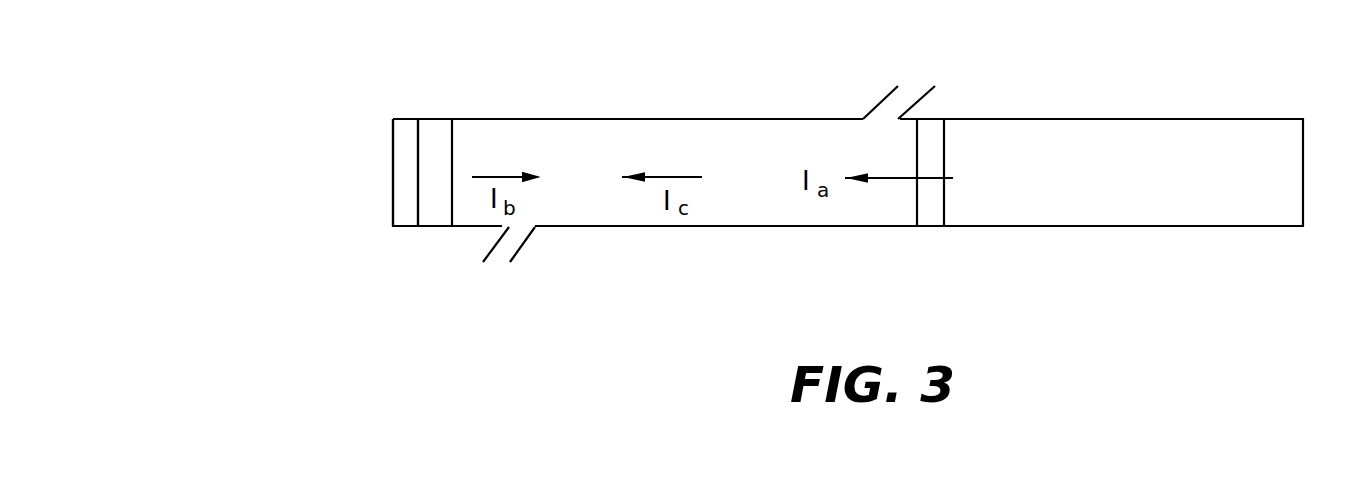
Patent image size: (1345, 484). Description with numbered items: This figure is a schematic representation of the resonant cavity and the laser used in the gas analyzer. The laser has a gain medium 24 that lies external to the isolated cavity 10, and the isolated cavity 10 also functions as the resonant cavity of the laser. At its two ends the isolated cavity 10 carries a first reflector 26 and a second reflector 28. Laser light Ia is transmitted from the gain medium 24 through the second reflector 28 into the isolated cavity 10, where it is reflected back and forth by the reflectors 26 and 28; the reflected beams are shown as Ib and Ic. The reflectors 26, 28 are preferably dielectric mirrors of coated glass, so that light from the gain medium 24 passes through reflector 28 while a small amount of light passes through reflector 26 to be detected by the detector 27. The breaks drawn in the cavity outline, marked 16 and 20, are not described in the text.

The isolated cavity 10 is at (752, 215).
The break in lower edge 16 is at (517, 253).
The break in upper edge 20 is at (887, 97).
The gain medium 24 is at (1228, 172).
The first reflector 26 is at (432, 160).
The detector 27 is at (403, 200).
The second reflector 28 is at (930, 210).